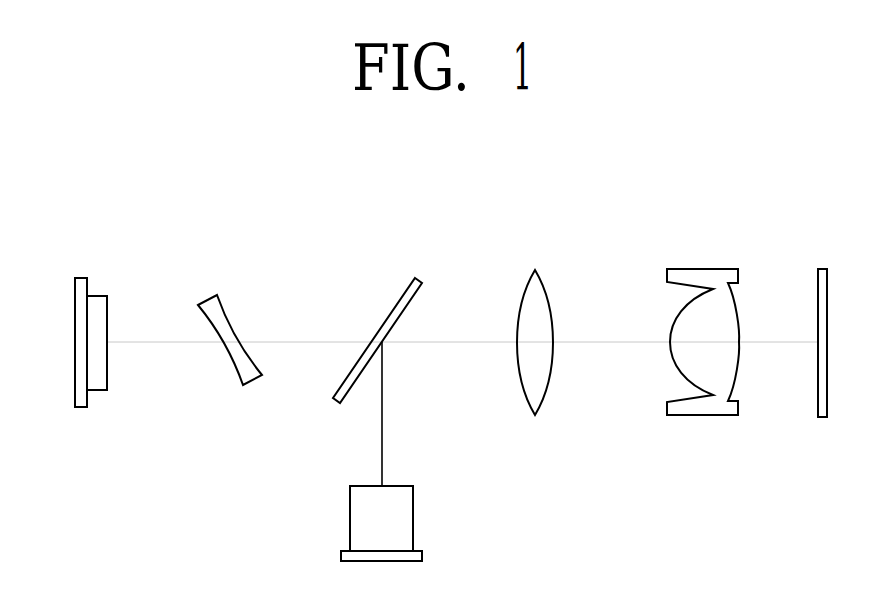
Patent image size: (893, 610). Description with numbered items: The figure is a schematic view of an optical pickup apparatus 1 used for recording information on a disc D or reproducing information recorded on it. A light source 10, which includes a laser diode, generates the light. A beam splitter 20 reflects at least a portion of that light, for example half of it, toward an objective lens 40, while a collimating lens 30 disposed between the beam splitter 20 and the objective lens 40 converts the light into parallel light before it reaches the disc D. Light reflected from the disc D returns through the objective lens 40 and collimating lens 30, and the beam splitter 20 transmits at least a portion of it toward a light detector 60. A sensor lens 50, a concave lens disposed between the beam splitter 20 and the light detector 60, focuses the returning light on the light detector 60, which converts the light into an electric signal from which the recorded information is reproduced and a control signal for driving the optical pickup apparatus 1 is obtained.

The optical pickup apparatus 1 is at (486, 152).
The light source 10 is at (413, 522).
The beam splitter 20 is at (415, 276).
The collimating lens 30 is at (535, 268).
The objective lens 40 is at (704, 268).
The sensor lens 50 is at (203, 302).
The light detector 60 is at (78, 276).
The disc D is at (822, 268).